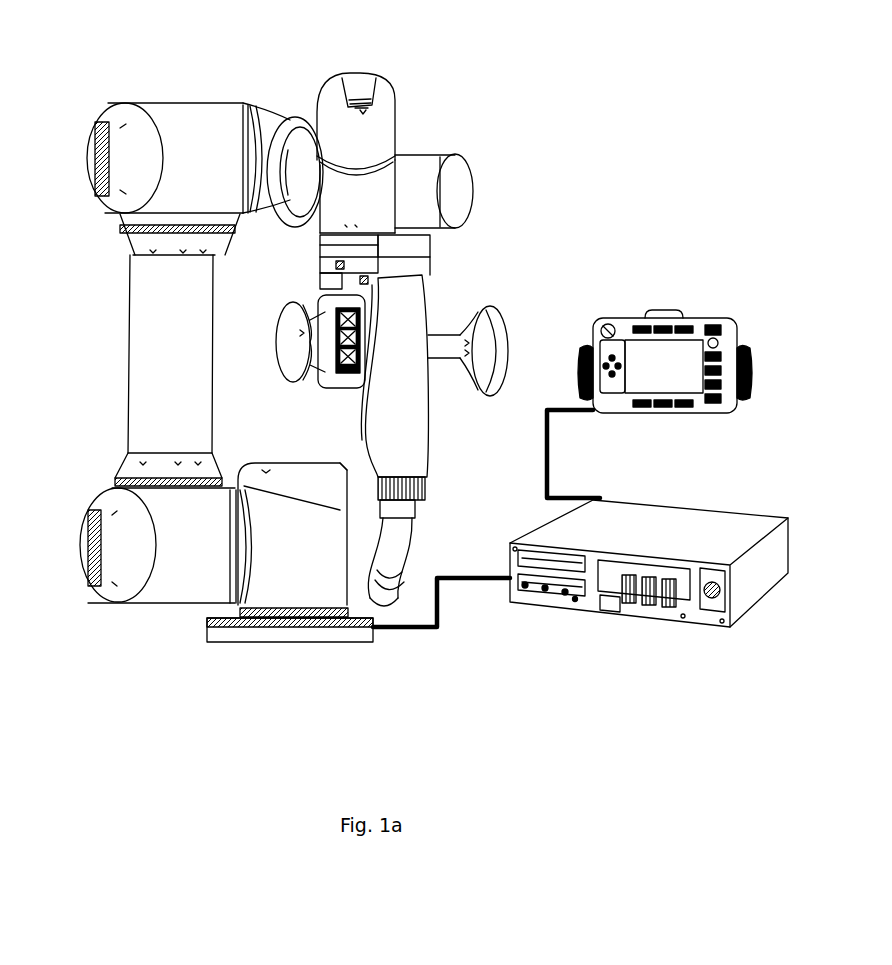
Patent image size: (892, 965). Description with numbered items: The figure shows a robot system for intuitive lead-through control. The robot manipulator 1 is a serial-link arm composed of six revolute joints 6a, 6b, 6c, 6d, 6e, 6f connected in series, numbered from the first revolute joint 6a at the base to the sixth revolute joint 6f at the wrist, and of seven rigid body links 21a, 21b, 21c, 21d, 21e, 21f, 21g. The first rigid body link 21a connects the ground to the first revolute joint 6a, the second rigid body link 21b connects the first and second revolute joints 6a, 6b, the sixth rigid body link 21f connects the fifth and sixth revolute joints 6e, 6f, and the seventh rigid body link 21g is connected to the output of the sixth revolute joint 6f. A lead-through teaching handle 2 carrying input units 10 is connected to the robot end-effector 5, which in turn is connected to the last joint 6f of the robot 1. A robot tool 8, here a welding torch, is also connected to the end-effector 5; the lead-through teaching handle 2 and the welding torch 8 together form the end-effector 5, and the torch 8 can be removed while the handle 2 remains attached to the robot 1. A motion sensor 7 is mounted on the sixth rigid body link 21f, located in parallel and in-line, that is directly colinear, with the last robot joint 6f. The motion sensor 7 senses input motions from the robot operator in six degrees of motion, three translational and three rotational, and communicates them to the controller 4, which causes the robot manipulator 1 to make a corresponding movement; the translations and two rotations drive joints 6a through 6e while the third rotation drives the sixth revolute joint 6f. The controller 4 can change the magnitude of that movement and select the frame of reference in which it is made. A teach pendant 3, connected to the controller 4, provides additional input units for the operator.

The robot manipulator 1 is at (105, 283).
The lead-through teaching handle 2 is at (491, 295).
The teach pendant 3 is at (598, 313).
The controller 4 is at (697, 503).
The robot end-effector 5 is at (337, 393).
The first revolute joint 6a is at (233, 603).
The second revolute joint 6b is at (233, 488).
The third revolute joint 6c is at (240, 103).
The fourth revolute joint 6d is at (400, 152).
The fifth revolute joint 6e is at (307, 163).
The sixth revolute joint 6f is at (312, 248).
The motion sensor 7 is at (372, 72).
The robot tool 8 is at (424, 504).
The input units 10 is at (333, 350).
The first rigid body link 21a is at (300, 643).
The second rigid body link 21b is at (263, 537).
The third rigid body link 21c is at (145, 342).
The fourth rigid body link 21d is at (286, 108).
The fifth rigid body link 21e is at (293, 193).
The sixth rigid body link 21f is at (384, 185).
The seventh rigid body link 21g is at (369, 258).